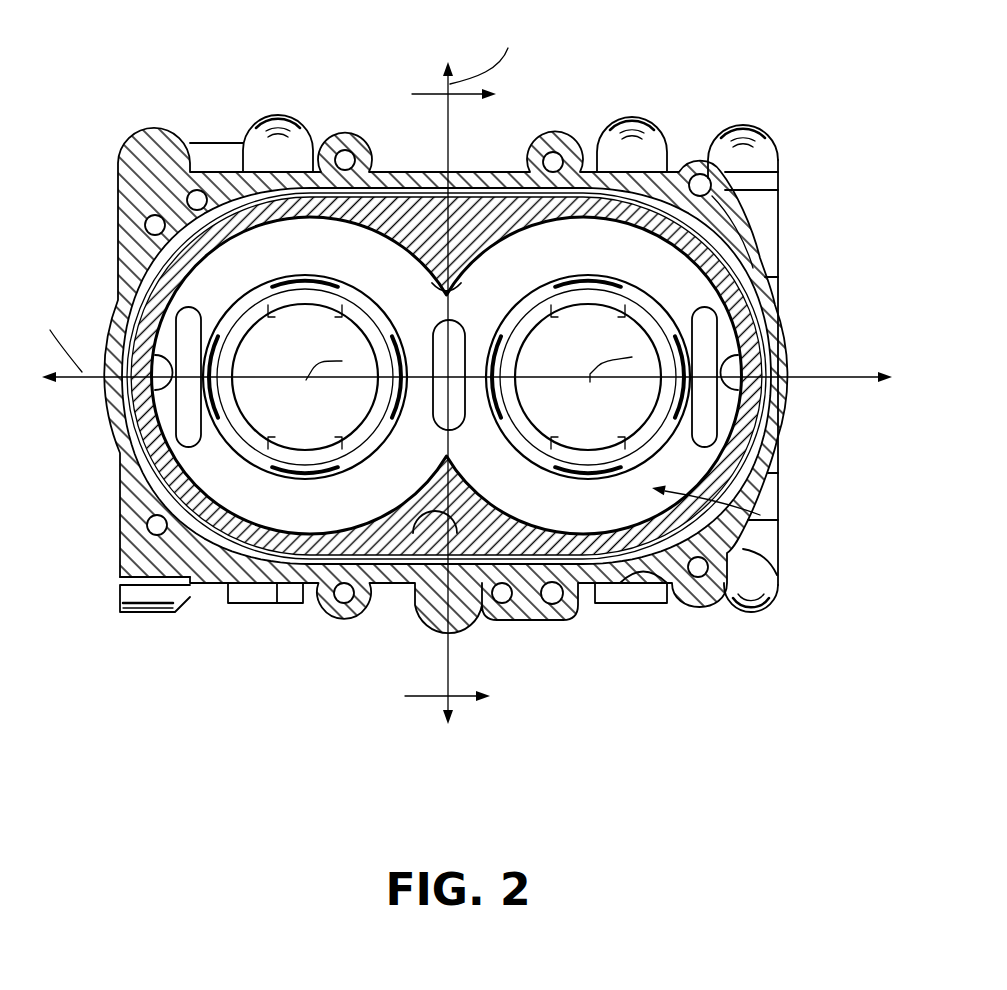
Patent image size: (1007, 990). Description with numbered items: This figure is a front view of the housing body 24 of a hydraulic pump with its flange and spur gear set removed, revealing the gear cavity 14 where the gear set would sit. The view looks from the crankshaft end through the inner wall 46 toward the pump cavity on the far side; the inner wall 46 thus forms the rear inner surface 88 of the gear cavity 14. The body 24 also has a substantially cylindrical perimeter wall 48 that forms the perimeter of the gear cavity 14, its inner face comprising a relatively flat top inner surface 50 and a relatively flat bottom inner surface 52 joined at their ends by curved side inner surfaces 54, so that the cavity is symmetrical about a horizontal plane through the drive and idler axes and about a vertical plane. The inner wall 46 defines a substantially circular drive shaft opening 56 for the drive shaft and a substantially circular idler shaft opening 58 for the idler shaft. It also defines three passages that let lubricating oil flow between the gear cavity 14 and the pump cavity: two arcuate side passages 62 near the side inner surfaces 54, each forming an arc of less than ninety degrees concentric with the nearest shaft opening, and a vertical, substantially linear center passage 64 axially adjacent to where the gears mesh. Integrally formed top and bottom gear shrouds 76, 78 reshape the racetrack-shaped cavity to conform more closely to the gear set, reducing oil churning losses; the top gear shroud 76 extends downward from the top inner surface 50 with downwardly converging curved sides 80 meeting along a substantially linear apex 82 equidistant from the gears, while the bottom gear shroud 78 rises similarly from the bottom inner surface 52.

The gear cavity 14 is at (660, 519).
The housing body 24 is at (150, 668).
The inner wall 46 is at (692, 293).
The perimeter wall 48 is at (633, 582).
The top inner surface 50 is at (484, 222).
The bottom inner surface 52 is at (417, 535).
The side inner surfaces 54 is at (178, 395).
The drive shaft opening 56 is at (636, 398).
The idler shaft opening 58 is at (273, 342).
The side passages 62 is at (170, 440).
The center passage 64 is at (440, 410).
The top gear shroud 76 is at (432, 253).
The bottom gear shroud 78 is at (478, 594).
The downwardly converging curved sides 80 is at (465, 273).
The apex 82 is at (448, 297).
The rear inner surface 88 is at (743, 547).